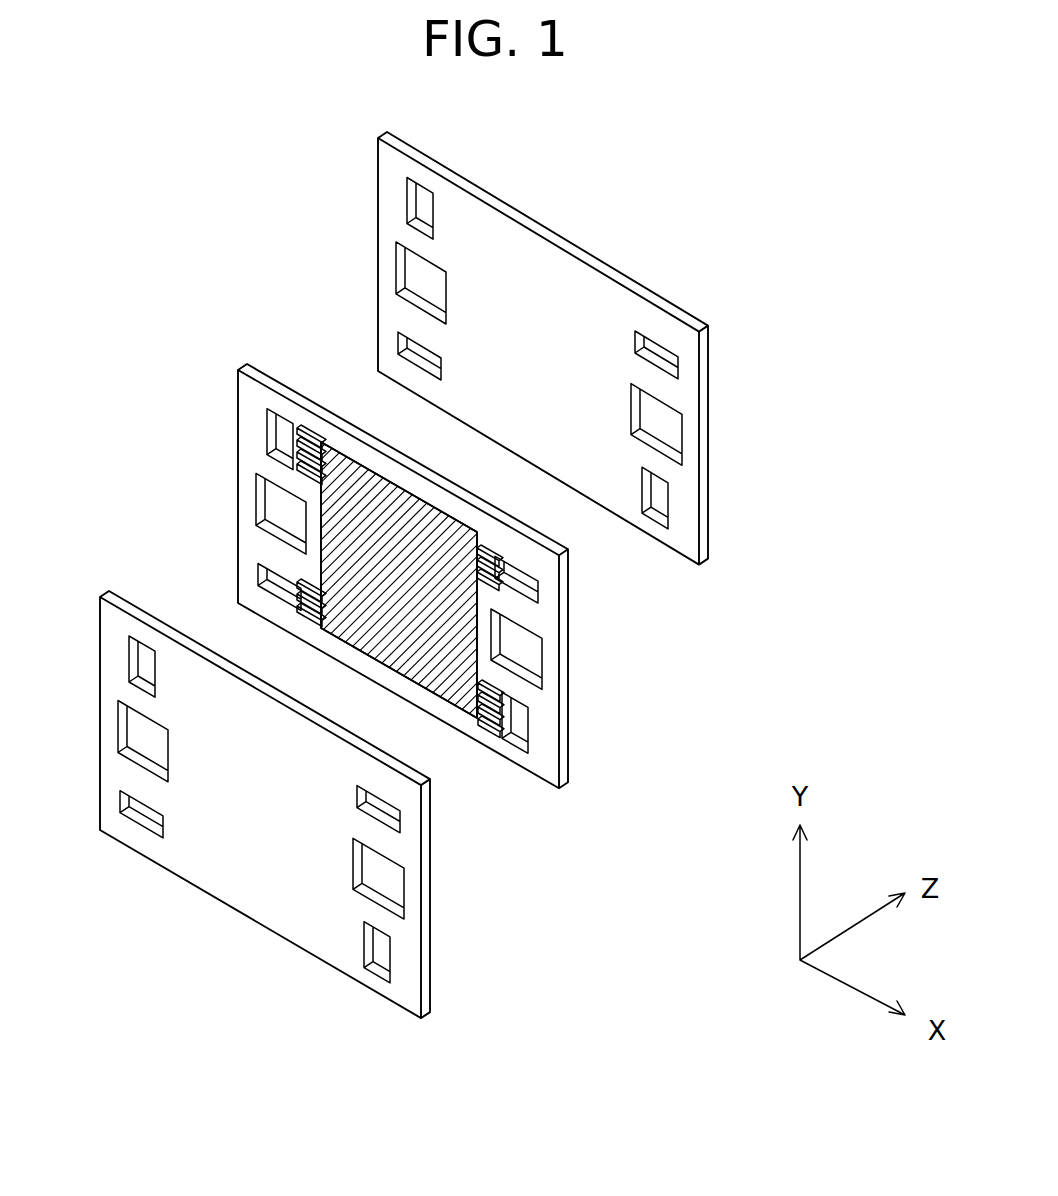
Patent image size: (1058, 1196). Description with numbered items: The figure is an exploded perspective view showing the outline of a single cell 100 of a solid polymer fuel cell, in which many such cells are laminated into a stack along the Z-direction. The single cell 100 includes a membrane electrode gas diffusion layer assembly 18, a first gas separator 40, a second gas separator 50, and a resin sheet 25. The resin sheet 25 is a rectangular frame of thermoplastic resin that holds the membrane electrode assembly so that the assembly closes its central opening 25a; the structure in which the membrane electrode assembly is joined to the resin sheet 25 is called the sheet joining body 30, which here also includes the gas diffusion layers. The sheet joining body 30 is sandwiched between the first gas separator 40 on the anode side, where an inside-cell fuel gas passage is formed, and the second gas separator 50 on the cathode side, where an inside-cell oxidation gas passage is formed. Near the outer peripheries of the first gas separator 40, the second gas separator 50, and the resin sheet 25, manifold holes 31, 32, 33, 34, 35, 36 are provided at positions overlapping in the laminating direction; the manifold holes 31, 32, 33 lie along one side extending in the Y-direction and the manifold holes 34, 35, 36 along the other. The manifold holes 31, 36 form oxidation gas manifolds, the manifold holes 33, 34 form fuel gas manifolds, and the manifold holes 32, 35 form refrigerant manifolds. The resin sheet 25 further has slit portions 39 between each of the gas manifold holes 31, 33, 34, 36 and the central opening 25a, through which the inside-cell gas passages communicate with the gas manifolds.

The single cell 100 is at (818, 262).
The sheet joining body 30 is at (711, 624).
The first gas separator 40 is at (563, 240).
The resin sheet 25 is at (572, 762).
The central opening 25a is at (340, 452).
The membrane electrode gas diffusion layer assembly (MEGA) 18 is at (362, 645).
The second gas separator 50 is at (258, 926).
The manifold hole 31 is at (407, 196).
The manifold hole 32 is at (395, 266).
The manifold hole 33 is at (397, 337).
The manifold hole 34 is at (677, 352).
The manifold hole 35 is at (682, 428).
The manifold hole 36 is at (670, 498).
The slit portions 39 is at (297, 430).